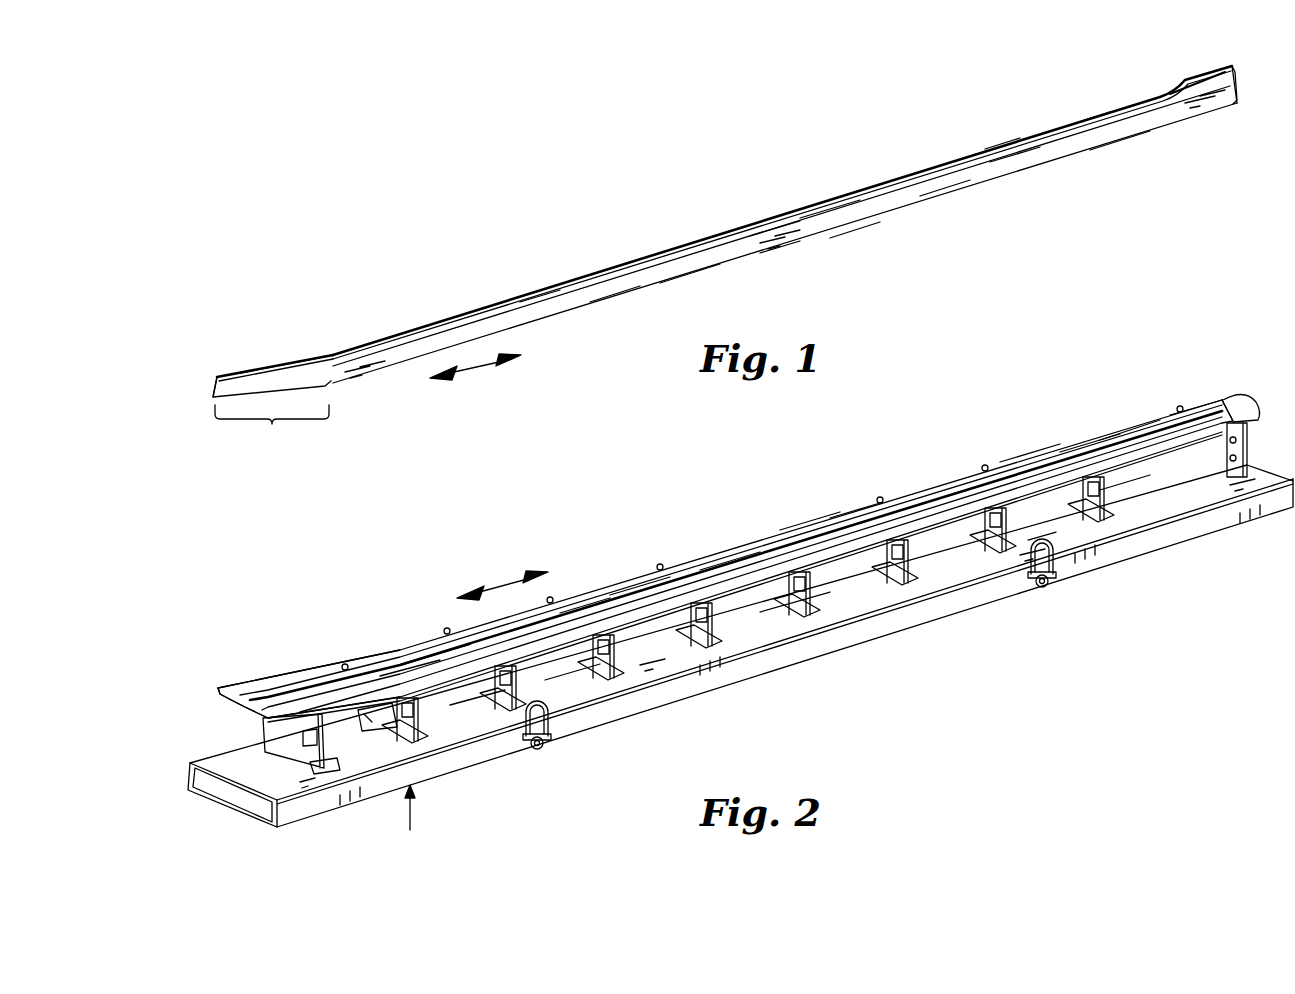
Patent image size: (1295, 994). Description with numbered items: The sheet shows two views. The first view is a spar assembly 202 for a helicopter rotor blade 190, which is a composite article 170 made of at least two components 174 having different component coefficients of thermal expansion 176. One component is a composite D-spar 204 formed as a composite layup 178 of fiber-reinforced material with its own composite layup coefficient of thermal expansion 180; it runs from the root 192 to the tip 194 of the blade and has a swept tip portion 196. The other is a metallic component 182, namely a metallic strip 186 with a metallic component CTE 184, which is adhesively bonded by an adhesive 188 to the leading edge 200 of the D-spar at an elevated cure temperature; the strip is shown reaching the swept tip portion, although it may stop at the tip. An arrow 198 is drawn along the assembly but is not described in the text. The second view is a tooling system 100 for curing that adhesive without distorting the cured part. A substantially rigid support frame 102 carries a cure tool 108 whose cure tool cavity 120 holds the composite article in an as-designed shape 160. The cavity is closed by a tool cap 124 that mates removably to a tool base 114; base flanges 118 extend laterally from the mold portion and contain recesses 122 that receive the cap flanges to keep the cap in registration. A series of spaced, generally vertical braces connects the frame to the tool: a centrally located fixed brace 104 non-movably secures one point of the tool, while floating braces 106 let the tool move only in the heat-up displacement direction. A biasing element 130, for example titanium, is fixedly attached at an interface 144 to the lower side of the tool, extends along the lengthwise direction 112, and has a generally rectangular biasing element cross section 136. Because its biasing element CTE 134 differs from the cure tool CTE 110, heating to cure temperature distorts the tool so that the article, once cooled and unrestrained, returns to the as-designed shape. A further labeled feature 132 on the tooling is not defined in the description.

In FIG. 2, the tooling system 100 is at (410, 820).
In FIG. 2, the support frame 102 is at (466, 755).
In FIG. 2, the fixed brace 104 is at (800, 620).
In FIG. 2, the floating brace 106 is at (272, 742).
In FIG. 2, the cure tool 108 is at (1030, 456).
In FIG. 2, the cure tool CTE 110 is at (1085, 445).
In FIG. 2, the lengthwise direction 112 is at (502, 562).
In FIG. 2, the tool base 114 is at (1118, 475).
In FIG. 2, the base flanges 118 is at (808, 520).
In FIG. 2, the cure tool cavity 120 is at (852, 503).
In FIG. 1, the recesses 122 is at (310, 356).
In FIG. 2, the tool cap 124 is at (732, 552).
In FIG. 2, the biasing element 130 is at (1048, 520).
In FIG. 2, the D-ring 132 is at (548, 680).
In FIG. 2, the biasing element CTE 134 is at (580, 672).
In FIG. 2, the biasing element cross section 136 is at (470, 698).
In FIG. 2, the interface 144 is at (385, 720).
In FIG. 2, the as-designed shape 160 is at (640, 570).
In FIG. 1, the composite article 170 is at (402, 328).
In FIG. 2, the composite article 170 is at (920, 488).
In FIG. 1, the component 174 is at (615, 265).
In FIG. 2, the component 174 is at (1137, 422).
In FIG. 1, the component coefficient of thermal expansion 176 is at (680, 275).
In FIG. 2, the component coefficient of thermal expansion 176 is at (1190, 398).
In FIG. 1, the composite layup 178 is at (781, 222).
In FIG. 1, the composite layup coefficient of thermal expansion 180 is at (840, 198).
In FIG. 1, the metallic component 182 is at (765, 256).
In FIG. 1, the metallic component CTE 184 is at (842, 228).
In FIG. 1, the metallic strip 186 is at (933, 200).
In FIG. 1, the adhesive 188 is at (532, 282).
In FIG. 2, the adhesive 188 is at (580, 600).
In FIG. 1, the rotor blade 190 is at (1014, 141).
In FIG. 1, the root 192 is at (1240, 72).
In FIG. 2, the root 192 is at (1238, 396).
In FIG. 1, the tip 194 is at (213, 385).
In FIG. 2, the tip 194 is at (265, 680).
In FIG. 1, the swept tip portion 196 is at (273, 404).
In FIG. 2, the swept tip portion 196 is at (302, 676).
In FIG. 1, the longitudinal direction 198 is at (475, 388).
In FIG. 1, the leading edge 200 is at (1119, 146).
In FIG. 1, the spar assembly 202 is at (1087, 118).
In FIG. 2, the spar assembly 202 is at (400, 665).
In FIG. 1, the composite D-spar 204 is at (1207, 70).
In FIG. 2, the composite D-spar 204 is at (432, 650).